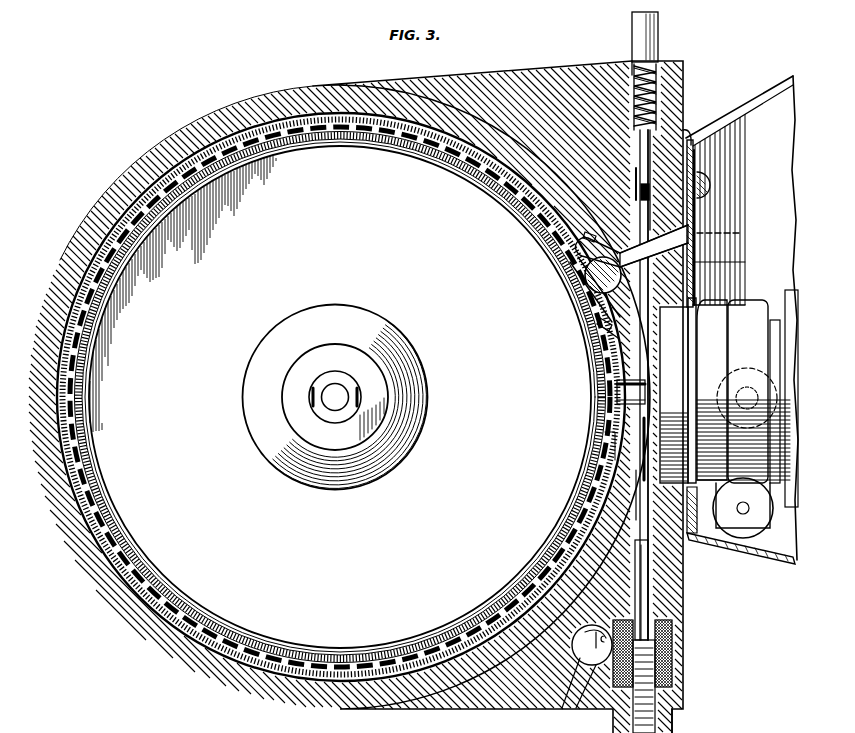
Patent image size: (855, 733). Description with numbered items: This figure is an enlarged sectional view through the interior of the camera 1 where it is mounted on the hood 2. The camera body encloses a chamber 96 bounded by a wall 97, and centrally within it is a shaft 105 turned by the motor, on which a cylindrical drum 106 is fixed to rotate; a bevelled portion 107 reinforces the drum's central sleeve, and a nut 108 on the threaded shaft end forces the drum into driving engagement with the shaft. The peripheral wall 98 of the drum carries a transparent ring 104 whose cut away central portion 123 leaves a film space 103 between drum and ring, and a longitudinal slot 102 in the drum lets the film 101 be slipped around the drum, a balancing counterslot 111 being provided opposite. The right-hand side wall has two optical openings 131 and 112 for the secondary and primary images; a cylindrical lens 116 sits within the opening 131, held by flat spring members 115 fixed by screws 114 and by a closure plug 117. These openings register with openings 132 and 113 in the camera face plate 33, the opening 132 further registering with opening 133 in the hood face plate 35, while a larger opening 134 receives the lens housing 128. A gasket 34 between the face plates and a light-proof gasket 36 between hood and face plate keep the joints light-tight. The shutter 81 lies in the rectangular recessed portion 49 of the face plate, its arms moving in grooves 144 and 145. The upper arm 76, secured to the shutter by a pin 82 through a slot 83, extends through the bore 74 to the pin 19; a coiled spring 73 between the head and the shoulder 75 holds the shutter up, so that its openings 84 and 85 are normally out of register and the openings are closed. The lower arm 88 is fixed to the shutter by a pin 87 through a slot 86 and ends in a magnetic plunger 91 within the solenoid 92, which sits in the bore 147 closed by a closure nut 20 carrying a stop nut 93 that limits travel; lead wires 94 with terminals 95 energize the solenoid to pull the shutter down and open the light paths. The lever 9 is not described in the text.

The camera 1 is at (189, 118).
The hood 2 is at (755, 100).
The lever 9 is at (550, 308).
The pin 19 is at (653, 45).
The closure nut 20 is at (674, 730).
The face plate 33 is at (686, 545).
The gasket 34 is at (684, 563).
The face plate 35 is at (689, 139).
The light-proof gasket 36 is at (700, 270).
The rectangular recessed portion 49 is at (674, 395).
The coiled spring 73 is at (660, 68).
The bore 74 is at (658, 97).
The shoulder 75 is at (660, 140).
The upper arm 76 is at (624, 66).
The camera shutter 81 is at (712, 390).
The pin 82 is at (633, 180).
The slot 83 is at (640, 194).
The shutter opening 84 is at (697, 208).
The shutter opening 85 is at (650, 366).
The slot 86 is at (646, 445).
The pin 87 is at (602, 450).
The arm 88 is at (640, 506).
The plunger 91 is at (652, 595).
The solenoid 92 is at (672, 666).
The stop nut 93 is at (656, 697).
The lead wires 94 is at (592, 646).
The terminals 95 is at (560, 706).
The chamber 96 is at (120, 186).
The wall 97 is at (80, 232).
The peripheral wall 98 is at (130, 244).
The film 101 is at (306, 133).
The longitudinal slot 102 is at (82, 384).
The film space 103 is at (88, 322).
The ring 104 is at (206, 624).
The shaft 105 is at (341, 380).
The drum 106 is at (340, 397).
The bevelled portion 107 is at (428, 386).
The nut 108 is at (298, 408).
The balancing counterslot 111 is at (606, 386).
The optical opening 112 is at (612, 406).
The opening 113 is at (642, 396).
The screws 114 is at (583, 240).
The flat spring members 115 is at (578, 268).
The cylindrical lens 116 is at (585, 283).
The closure plug 117 is at (572, 259).
The cut away central portion 123 is at (268, 646).
The lens housing 128 is at (747, 398).
The optical opening 131 is at (606, 332).
The opening 132 is at (700, 249).
The opening 133 is at (700, 227).
The larger opening 134 is at (700, 294).
The groove 144 is at (708, 178).
The groove 145 is at (642, 482).
The bore 147 is at (672, 642).